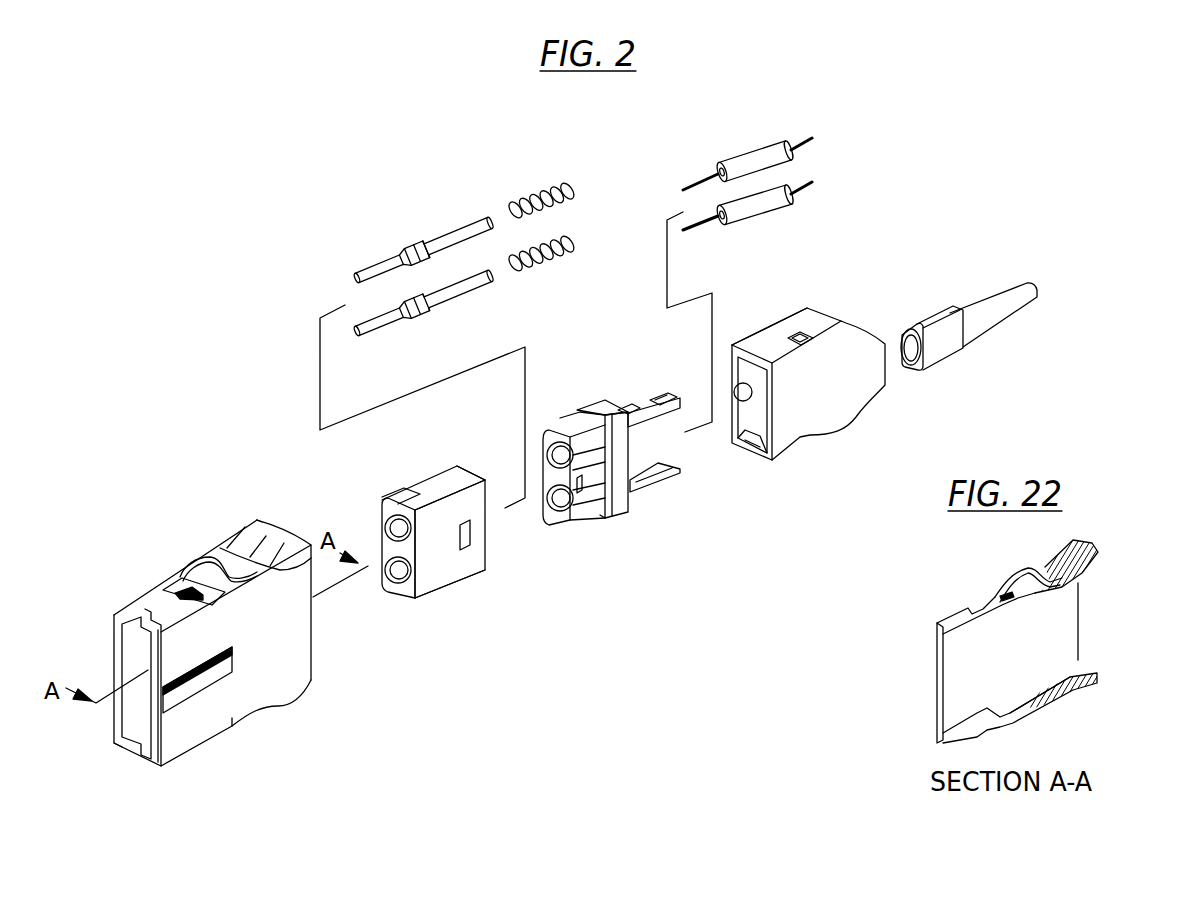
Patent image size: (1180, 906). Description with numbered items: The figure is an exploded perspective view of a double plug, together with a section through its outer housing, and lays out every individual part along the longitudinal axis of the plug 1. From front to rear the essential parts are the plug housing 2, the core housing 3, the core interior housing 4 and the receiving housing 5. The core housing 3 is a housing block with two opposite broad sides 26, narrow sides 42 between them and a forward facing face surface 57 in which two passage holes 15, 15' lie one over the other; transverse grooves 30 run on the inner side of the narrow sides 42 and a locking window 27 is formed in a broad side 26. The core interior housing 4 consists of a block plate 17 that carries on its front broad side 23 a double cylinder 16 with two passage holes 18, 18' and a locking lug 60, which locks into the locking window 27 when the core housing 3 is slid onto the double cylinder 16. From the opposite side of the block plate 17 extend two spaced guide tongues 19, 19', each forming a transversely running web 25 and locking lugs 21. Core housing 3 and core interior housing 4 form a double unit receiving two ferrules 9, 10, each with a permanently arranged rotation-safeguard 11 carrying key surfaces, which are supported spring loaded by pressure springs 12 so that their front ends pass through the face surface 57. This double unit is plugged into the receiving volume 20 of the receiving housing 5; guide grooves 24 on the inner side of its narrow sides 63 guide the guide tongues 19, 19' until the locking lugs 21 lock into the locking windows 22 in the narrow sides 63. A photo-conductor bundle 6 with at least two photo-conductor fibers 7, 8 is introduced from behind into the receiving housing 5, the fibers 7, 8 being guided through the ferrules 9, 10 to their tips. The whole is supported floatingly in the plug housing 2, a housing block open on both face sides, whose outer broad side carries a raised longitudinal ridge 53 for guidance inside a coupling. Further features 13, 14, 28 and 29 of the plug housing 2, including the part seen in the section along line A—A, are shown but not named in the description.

In FIG. 2, the plug 1 is at (256, 208).
In FIG. 2, the plug housing 2 is at (272, 652).
In FIG. 22, the plug housing 2 is at (1067, 615).
In FIG. 2, the core housing 3 is at (510, 672).
In FIG. 2, the core interior housing 4 is at (700, 541).
In FIG. 2, the receiving housing 5 is at (810, 430).
In FIG. 2, the photo-conductor bundle 6 is at (945, 352).
In FIG. 2, the photo-conductor fiber 7 is at (797, 140).
In FIG. 2, the photo-conductor fiber 8 is at (797, 183).
In FIG. 2, the ferrule 9 is at (467, 225).
In FIG. 2, the ferrule 10 is at (463, 290).
In FIG. 2, the rotation-safeguard 11 is at (418, 242).
In FIG. 2, the pressure springs 12 is at (573, 183).
In FIG. 2, the latch arm 13 is at (208, 565).
In FIG. 22, the latch arm 13 is at (1010, 603).
In FIG. 2, the front wall 14 is at (128, 712).
In FIG. 2, the passage hole 15 is at (411, 606).
In FIG. 2, the passage hole 15' is at (369, 485).
In FIG. 2, the double cylinder 16 is at (593, 515).
In FIG. 2, the block plate 17 is at (597, 402).
In FIG. 2, the passage hole 18 is at (553, 531).
In FIG. 2, the passage hole 18' is at (550, 421).
In FIG. 2, the guide tongue 19 is at (667, 368).
In FIG. 2, the guide tongue 19' is at (687, 483).
In FIG. 2, the receiving volume 20 is at (745, 395).
In FIG. 2, the locking lug 21 is at (658, 393).
In FIG. 2, the locking window 22 is at (800, 334).
In FIG. 2, the front broad side 23 is at (600, 525).
In FIG. 2, the guide groove 24 is at (757, 450).
In FIG. 2, the transversely running web 25 is at (622, 407).
In FIG. 2, the broad side 26 is at (452, 568).
In FIG. 2, the locking window 27 is at (470, 548).
In FIG. 2, the latch window 28 is at (175, 576).
In FIG. 2, the ribbed grip 29 is at (248, 535).
In FIG. 2, the transverse groove 30 is at (403, 490).
In FIG. 2, the narrow side 42 is at (462, 475).
In FIG. 2, the longitudinal ridge 53 is at (190, 685).
In FIG. 2, the face surface 57 is at (415, 550).
In FIG. 2, the locking lug 60 is at (578, 495).
In FIG. 2, the narrow side 63 is at (777, 340).